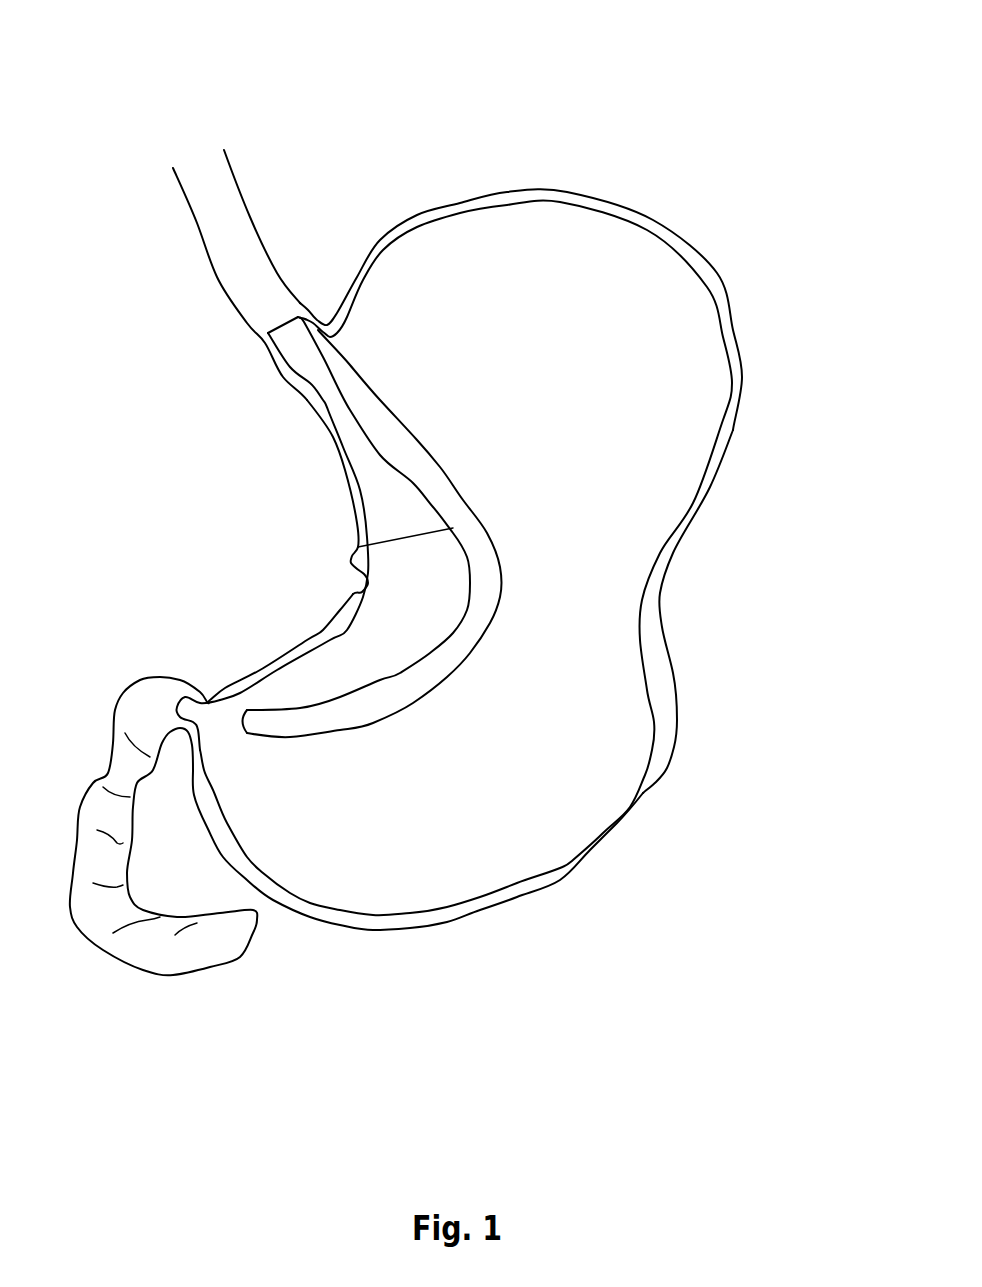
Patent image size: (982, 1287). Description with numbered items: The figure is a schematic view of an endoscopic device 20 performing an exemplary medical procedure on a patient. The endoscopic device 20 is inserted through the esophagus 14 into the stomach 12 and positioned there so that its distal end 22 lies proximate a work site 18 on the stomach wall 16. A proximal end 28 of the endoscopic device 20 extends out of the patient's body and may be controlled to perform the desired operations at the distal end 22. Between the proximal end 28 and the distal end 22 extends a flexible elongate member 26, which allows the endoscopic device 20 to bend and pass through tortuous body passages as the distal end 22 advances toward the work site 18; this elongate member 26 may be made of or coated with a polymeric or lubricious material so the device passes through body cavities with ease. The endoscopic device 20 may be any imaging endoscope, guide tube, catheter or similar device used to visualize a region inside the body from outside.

The stomach 12 is at (742, 334).
The esophagus 14 is at (231, 165).
The stomach wall 16 is at (634, 643).
The work site 18 is at (220, 758).
The endoscopic device 20 is at (385, 472).
The distal end 22 is at (252, 760).
The flexible elongate member 26 is at (355, 592).
The proximal end 28 is at (174, 9).